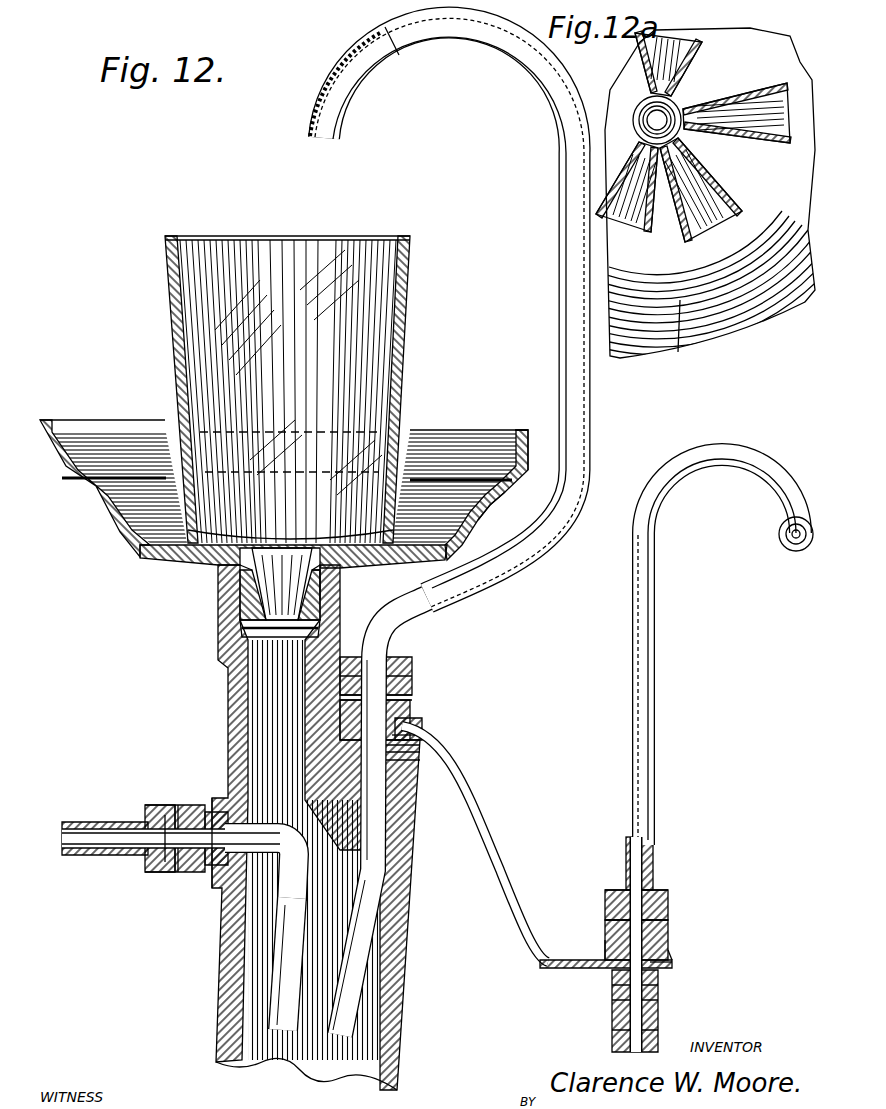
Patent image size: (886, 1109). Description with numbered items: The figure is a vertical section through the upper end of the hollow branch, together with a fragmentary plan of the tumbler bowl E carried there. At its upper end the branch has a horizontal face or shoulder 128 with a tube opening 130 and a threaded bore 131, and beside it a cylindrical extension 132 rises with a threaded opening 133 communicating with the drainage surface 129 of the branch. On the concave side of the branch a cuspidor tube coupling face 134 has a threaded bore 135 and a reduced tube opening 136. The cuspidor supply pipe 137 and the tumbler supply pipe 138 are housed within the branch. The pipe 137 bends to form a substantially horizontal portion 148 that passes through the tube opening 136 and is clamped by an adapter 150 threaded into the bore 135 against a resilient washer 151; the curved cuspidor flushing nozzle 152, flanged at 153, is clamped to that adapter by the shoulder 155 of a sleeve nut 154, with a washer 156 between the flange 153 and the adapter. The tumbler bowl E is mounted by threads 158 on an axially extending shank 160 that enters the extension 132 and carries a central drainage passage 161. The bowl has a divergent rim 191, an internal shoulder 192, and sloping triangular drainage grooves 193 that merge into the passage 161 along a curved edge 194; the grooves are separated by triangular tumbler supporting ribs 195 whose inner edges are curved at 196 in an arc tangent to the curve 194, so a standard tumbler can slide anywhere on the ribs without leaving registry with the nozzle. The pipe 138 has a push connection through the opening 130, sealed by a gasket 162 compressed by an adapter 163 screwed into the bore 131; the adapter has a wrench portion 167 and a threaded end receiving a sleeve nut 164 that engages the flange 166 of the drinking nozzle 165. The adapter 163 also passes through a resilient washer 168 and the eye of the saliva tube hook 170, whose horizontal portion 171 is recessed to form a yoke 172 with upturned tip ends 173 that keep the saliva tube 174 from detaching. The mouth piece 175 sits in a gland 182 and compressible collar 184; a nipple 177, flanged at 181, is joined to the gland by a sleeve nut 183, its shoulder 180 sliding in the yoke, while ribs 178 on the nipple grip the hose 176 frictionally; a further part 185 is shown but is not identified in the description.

In FIG. 12, the horizontal face or shoulder 128 is at (414, 726).
In FIG. 12, the drainage surface 129 is at (312, 1050).
In FIG. 12, the tube opening 130 is at (392, 762).
In FIG. 12, the threaded bore 131 is at (400, 746).
In FIG. 12, the cylindrical extension 132 is at (232, 688).
In FIG. 12, the threaded opening 133 is at (248, 592).
In FIG. 12, the cuspidor tube coupling face 134 is at (215, 882).
In FIG. 12, the threaded bore 135 is at (225, 800).
In FIG. 12, the reduced tube opening 136 is at (252, 840).
In FIG. 12, the cuspidor supply pipe 137 is at (280, 996).
In FIG. 12, the tumbler supply pipe 138 is at (342, 996).
In FIG. 12, the horizontal portion 148 is at (280, 846).
In FIG. 12, the adapter 150 is at (192, 880).
In FIG. 12, the resilient washer 151 is at (245, 826).
In FIG. 12, the cuspidor flushing nozzle 152 is at (96, 852).
In FIG. 12, the terminal flange 153 is at (160, 805).
In FIG. 12, the sleeve nut 154 is at (150, 816).
In FIG. 12, the shoulder 155 is at (165, 858).
In FIG. 12, the washer 156 is at (183, 862).
In FIG. 12, the threads 158 is at (252, 612).
In FIG. 12, the shank 160 is at (320, 608).
In FIG. 12, the central drainage passage 161 is at (245, 632).
In FIG. 12, the gasket or washer 162 is at (405, 753).
In FIG. 12, the adapter 163 is at (412, 704).
In FIG. 12, the sleeve-nut 164 is at (412, 660).
In FIG. 12, the drinking nozzle 165 is at (482, 593).
In FIG. 12, the flange 166 is at (412, 675).
In FIG. 12, the wrench portion 167 is at (400, 698).
In FIG. 12, the resilient washer 168 is at (405, 738).
In FIG. 12, the saliva tube hook 170 is at (482, 818).
In FIG. 12, the horizontal portion 171 is at (585, 969).
In FIG. 12, the yoke 172 is at (662, 966).
In FIG. 12, the tip ends 173 is at (676, 959).
In FIG. 12, the saliva tube 174 is at (655, 682).
In FIG. 12, the mouth piece 175 is at (779, 538).
In FIG. 12, the hose 176 is at (656, 1020).
In FIG. 12, the nipple 177 is at (656, 1000).
In FIG. 12, the ribs 178 is at (618, 1030).
In FIG. 12, the shoulder 180 is at (654, 968).
In FIG. 12, the flange 181 is at (607, 944).
In FIG. 12, the gland 182 is at (607, 906).
In FIG. 12, the sleeve nut 183 is at (668, 943).
In FIG. 12, the compressible collar 184 is at (668, 927).
In FIG. 12, the cap 185 is at (668, 906).
In FIG. 12, the divergent rim 191 is at (522, 431).
In FIG. 12A, the divergent rim 191 is at (740, 342).
In FIG. 12, the internal shoulder 192 is at (492, 499).
In FIG. 12A, the internal shoulder 192 is at (686, 352).
In FIG. 12A, the drainage grooves 193 is at (742, 46).
In FIG. 12, the curved edge 194 is at (245, 572).
In FIG. 12A, the curved edge 194 is at (650, 116).
In FIG. 12A, the tumbler supporting ribs 195 is at (722, 172).
In FIG. 12, the curved inner edges 196 is at (305, 525).
In FIG. 12A, the curved inner edges 196 is at (712, 108).
In FIG. 12, the tumbler bowl E is at (438, 432).
In FIG. 12A, the tumbler bowl E is at (783, 58).